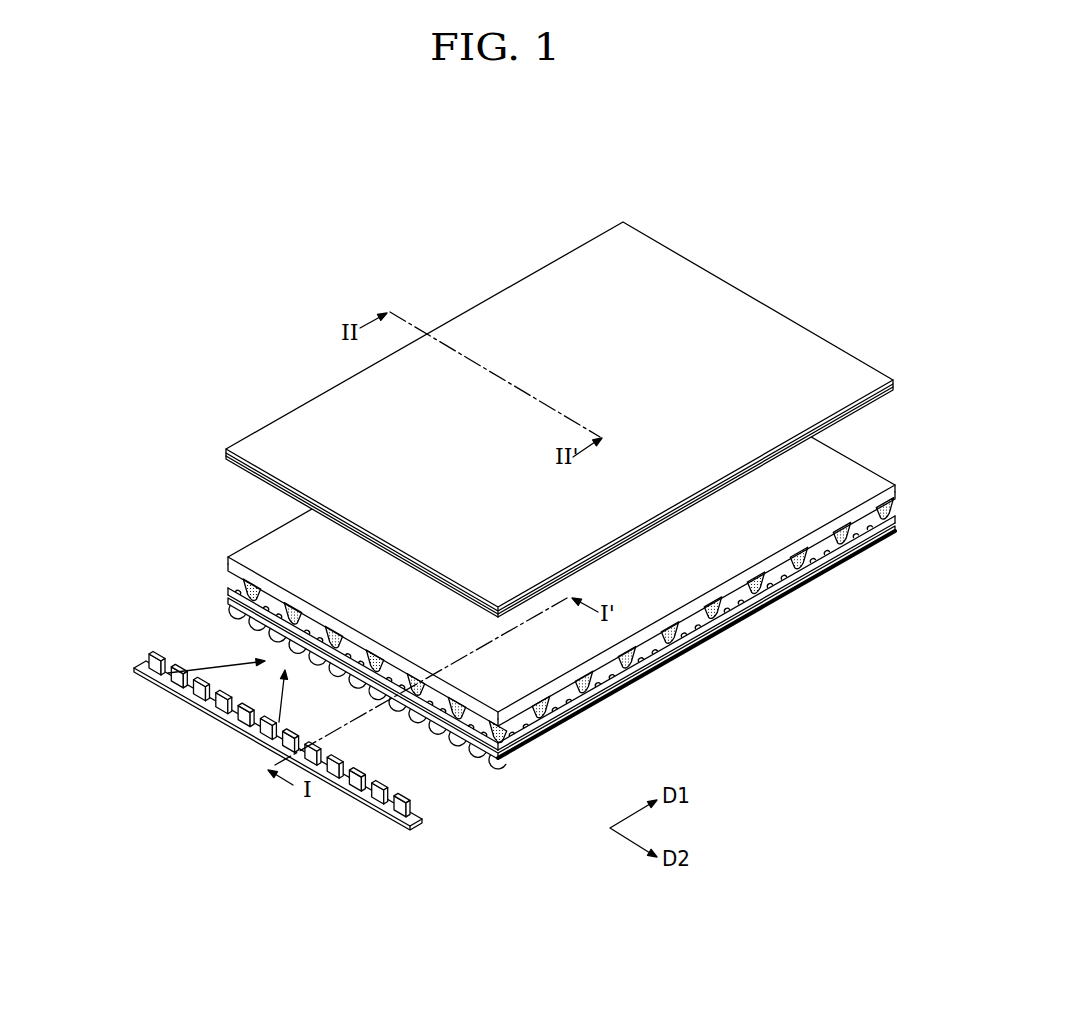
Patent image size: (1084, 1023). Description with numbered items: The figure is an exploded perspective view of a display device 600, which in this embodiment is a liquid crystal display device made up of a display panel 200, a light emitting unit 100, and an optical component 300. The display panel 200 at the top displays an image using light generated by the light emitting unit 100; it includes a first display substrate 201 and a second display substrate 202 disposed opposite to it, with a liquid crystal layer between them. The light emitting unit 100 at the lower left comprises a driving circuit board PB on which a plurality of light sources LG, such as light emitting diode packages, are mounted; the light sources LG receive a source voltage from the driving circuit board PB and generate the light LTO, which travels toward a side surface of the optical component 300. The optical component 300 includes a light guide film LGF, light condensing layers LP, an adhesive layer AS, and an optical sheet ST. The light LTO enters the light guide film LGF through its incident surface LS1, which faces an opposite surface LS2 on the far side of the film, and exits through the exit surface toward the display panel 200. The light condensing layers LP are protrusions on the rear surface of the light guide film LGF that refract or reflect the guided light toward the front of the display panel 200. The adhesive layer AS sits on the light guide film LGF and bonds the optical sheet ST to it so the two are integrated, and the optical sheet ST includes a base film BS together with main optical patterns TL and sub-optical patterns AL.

The display device 600 is at (402, 232).
The display panel 200 is at (913, 307).
The second display substrate 202 is at (800, 337).
The first display substrate 201 is at (885, 402).
The optical component 300 is at (125, 517).
The optical sheet ST is at (165, 502).
The base film BS is at (268, 551).
The main optical patterns TL is at (232, 566).
The adhesive layer AS is at (232, 581).
The sub-optical patterns AL is at (634, 660).
The light guide film LGF is at (234, 595).
The incident surface LS1 is at (478, 744).
The opposite surface LS2 is at (895, 527).
The light condensing layers LP is at (236, 608).
The light emitting unit 100 is at (353, 865).
The driving circuit board PB is at (358, 793).
The light sources LG is at (397, 805).
The light LTO is at (238, 663).